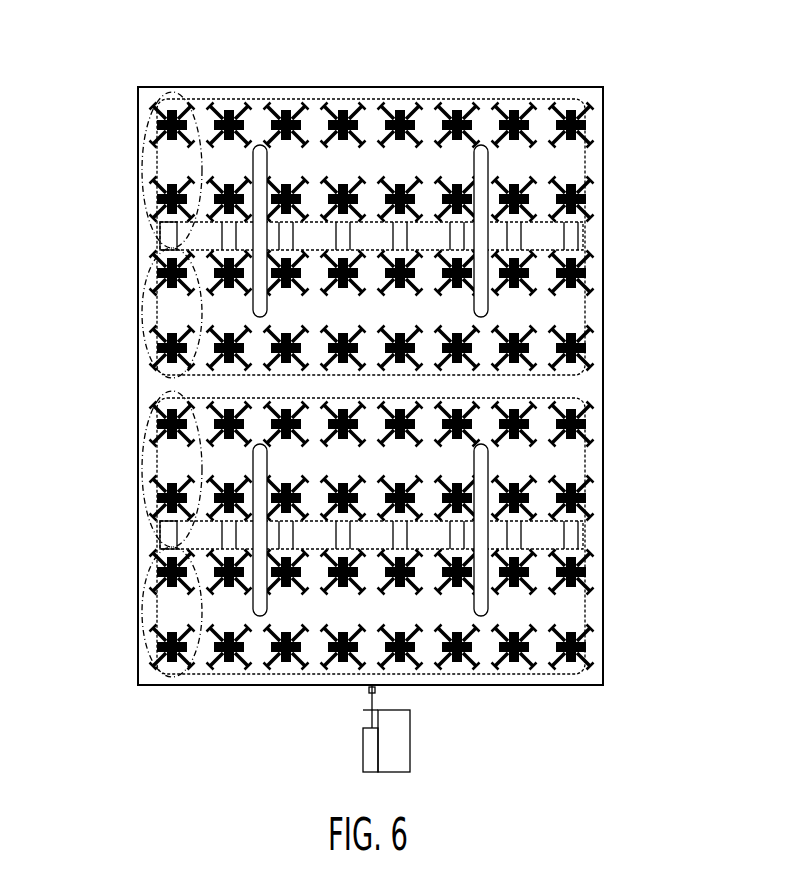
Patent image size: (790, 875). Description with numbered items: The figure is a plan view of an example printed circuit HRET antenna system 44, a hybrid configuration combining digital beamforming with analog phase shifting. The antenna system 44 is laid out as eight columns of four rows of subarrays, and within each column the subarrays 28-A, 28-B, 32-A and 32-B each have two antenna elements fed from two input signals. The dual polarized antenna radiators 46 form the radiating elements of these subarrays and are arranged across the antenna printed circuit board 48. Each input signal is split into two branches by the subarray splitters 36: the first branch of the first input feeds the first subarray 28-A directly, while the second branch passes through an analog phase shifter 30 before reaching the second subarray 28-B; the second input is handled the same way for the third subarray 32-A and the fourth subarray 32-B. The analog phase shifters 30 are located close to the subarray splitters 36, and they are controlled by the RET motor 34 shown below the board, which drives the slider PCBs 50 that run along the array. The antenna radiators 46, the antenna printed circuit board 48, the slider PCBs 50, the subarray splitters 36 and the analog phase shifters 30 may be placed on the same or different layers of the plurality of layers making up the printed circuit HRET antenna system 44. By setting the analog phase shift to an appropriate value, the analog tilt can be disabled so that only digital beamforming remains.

The printed circuit HRET antenna system 44 is at (395, 16).
The subarray splitters 36 is at (413, 237).
The analog phase shifters 30 is at (558, 243).
The antenna radiators 46 is at (590, 340).
The antenna printed circuit board 48 is at (595, 447).
The slider PCBs 50 is at (553, 537).
The subarray 1 28-A is at (157, 218).
The subarray 2 28-B is at (157, 364).
The subarray 3 32-A is at (157, 518).
The subarray 4 32-B is at (157, 663).
The RET motor 34 is at (415, 757).